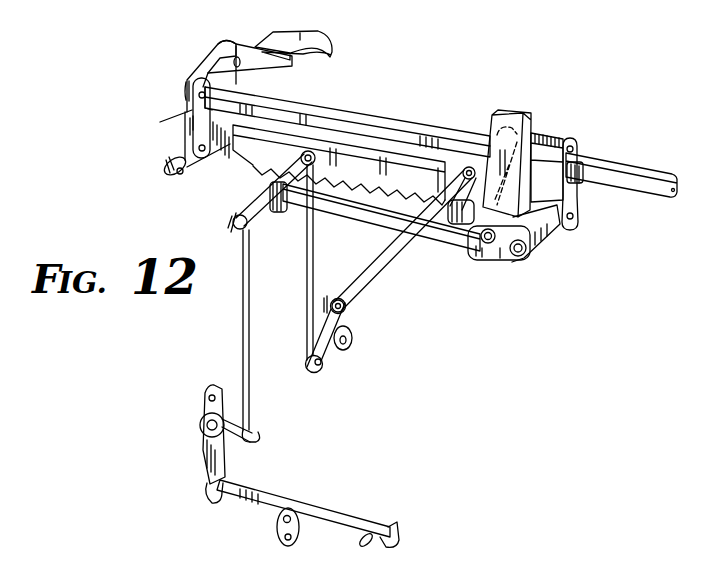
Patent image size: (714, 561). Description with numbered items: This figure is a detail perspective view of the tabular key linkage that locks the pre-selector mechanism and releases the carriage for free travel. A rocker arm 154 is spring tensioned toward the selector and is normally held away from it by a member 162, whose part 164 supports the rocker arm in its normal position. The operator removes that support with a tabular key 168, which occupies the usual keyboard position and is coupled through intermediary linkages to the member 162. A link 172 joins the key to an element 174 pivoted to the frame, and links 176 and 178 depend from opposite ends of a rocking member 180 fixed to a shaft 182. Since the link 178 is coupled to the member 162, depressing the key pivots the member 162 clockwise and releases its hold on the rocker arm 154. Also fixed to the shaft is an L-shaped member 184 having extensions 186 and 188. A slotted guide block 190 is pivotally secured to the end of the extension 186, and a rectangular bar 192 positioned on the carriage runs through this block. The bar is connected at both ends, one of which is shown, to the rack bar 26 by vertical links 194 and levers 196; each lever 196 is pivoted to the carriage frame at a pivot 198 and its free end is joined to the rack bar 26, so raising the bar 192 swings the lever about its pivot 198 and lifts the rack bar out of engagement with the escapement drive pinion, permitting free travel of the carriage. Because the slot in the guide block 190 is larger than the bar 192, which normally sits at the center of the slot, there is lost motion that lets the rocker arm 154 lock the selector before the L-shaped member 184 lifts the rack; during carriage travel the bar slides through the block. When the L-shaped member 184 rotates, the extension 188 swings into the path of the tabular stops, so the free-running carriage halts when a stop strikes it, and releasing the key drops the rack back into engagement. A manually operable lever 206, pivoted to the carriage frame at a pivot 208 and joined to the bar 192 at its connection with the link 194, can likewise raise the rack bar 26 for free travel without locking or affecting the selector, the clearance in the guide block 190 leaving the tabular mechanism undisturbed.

The rack bar 26 is at (339, 165).
The rocker arm 154 is at (318, 515).
The member 162 is at (206, 459).
The part 164 is at (211, 503).
The tabular key 168 is at (542, 132).
The link 172 is at (382, 272).
The element 174 is at (330, 367).
The link 176 is at (313, 262).
The link 178 is at (249, 298).
The rocking member 180 is at (234, 212).
The shaft 182 is at (448, 248).
The L-shaped member 184 is at (521, 262).
The extension 186 is at (550, 240).
The extension 188 is at (510, 111).
The slotted guide block 190 is at (562, 142).
The rectangular bar 192 is at (622, 200).
The vertical link 194 is at (190, 116).
The lever 196 is at (190, 150).
The pivot 198 is at (172, 178).
The manually operable lever 206 is at (320, 56).
The pivot 208 is at (241, 66).